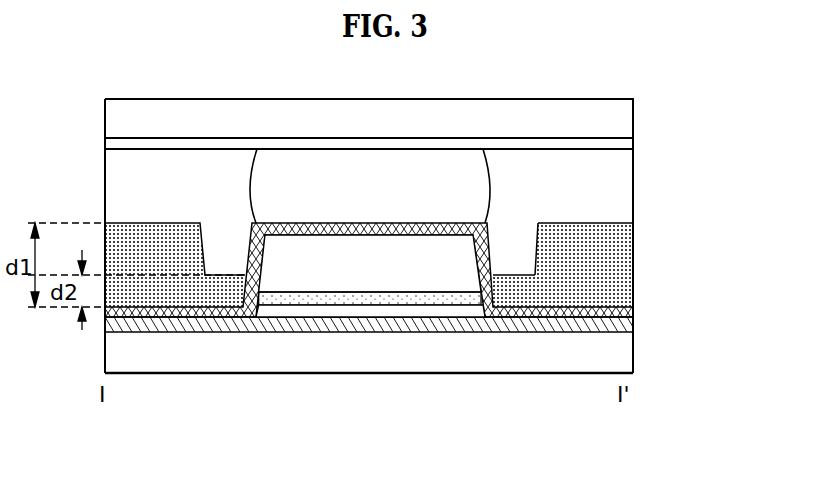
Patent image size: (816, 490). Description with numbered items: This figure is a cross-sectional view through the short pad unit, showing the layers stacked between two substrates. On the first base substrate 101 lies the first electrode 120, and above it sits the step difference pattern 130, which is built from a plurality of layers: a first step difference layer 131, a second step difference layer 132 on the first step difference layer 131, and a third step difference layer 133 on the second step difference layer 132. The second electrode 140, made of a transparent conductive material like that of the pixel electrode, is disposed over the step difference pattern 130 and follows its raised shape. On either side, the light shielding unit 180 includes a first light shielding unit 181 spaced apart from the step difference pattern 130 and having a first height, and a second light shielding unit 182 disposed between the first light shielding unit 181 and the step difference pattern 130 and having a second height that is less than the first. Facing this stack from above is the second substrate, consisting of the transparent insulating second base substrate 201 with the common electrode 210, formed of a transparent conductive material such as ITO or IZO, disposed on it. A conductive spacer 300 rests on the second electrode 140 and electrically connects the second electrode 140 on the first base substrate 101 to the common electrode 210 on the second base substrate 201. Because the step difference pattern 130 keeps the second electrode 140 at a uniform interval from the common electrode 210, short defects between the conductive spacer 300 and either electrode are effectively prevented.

The first base substrate 101 is at (618, 352).
The first electrode 120 is at (200, 328).
The step difference pattern 130 is at (370, 354).
The first step difference layer 131 is at (403, 420).
The second step difference layer 132 is at (350, 293).
The third step difference layer 133 is at (400, 272).
The second electrode 140 is at (458, 228).
The light shielding unit 180 is at (444, 266).
The first light shielding unit 181 is at (600, 247).
The second light shielding unit 182 is at (518, 292).
The second base substrate 201 is at (612, 117).
The common electrode 210 is at (612, 143).
The conductive spacer 300 is at (467, 183).